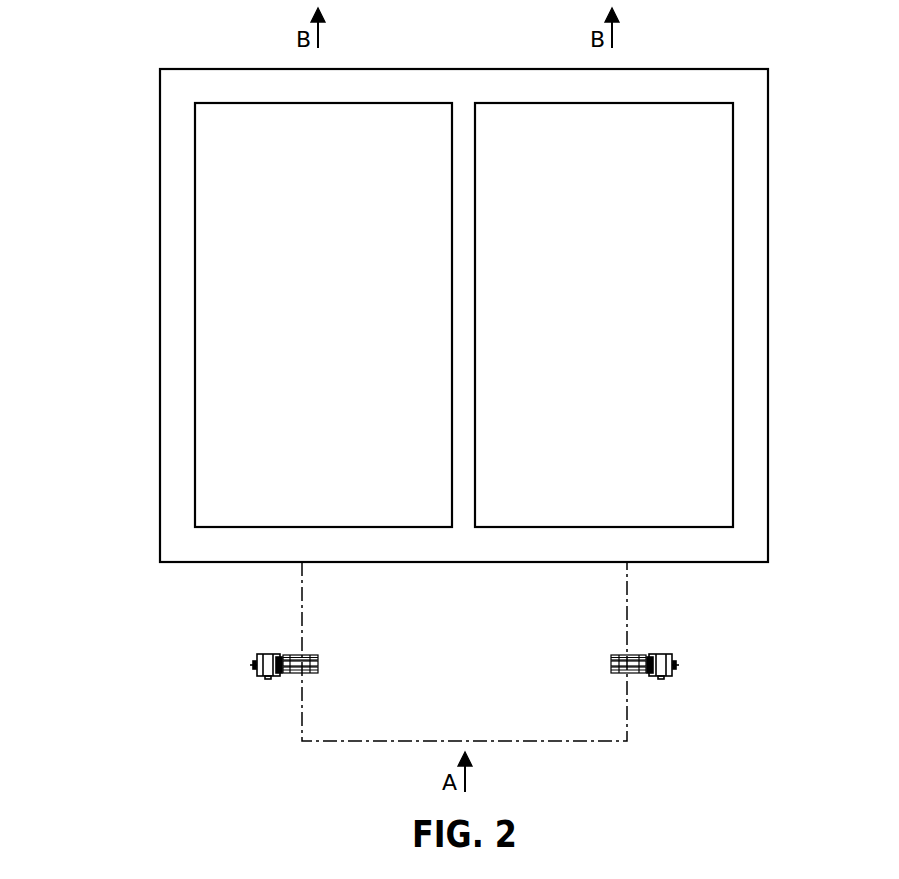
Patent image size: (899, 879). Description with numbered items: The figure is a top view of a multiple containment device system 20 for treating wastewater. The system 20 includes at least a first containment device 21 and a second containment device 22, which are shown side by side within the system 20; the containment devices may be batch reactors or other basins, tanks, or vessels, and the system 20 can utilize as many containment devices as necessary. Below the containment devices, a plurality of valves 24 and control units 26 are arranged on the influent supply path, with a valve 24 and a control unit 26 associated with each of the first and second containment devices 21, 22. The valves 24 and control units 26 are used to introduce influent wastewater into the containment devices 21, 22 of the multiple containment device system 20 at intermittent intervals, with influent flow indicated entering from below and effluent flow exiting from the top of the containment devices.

The multiple containment device system 20 is at (160, 548).
The first containment device 21 is at (340, 336).
The second containment device 22 is at (625, 336).
The valve 24 is at (296, 676).
The control unit 26 is at (250, 668).